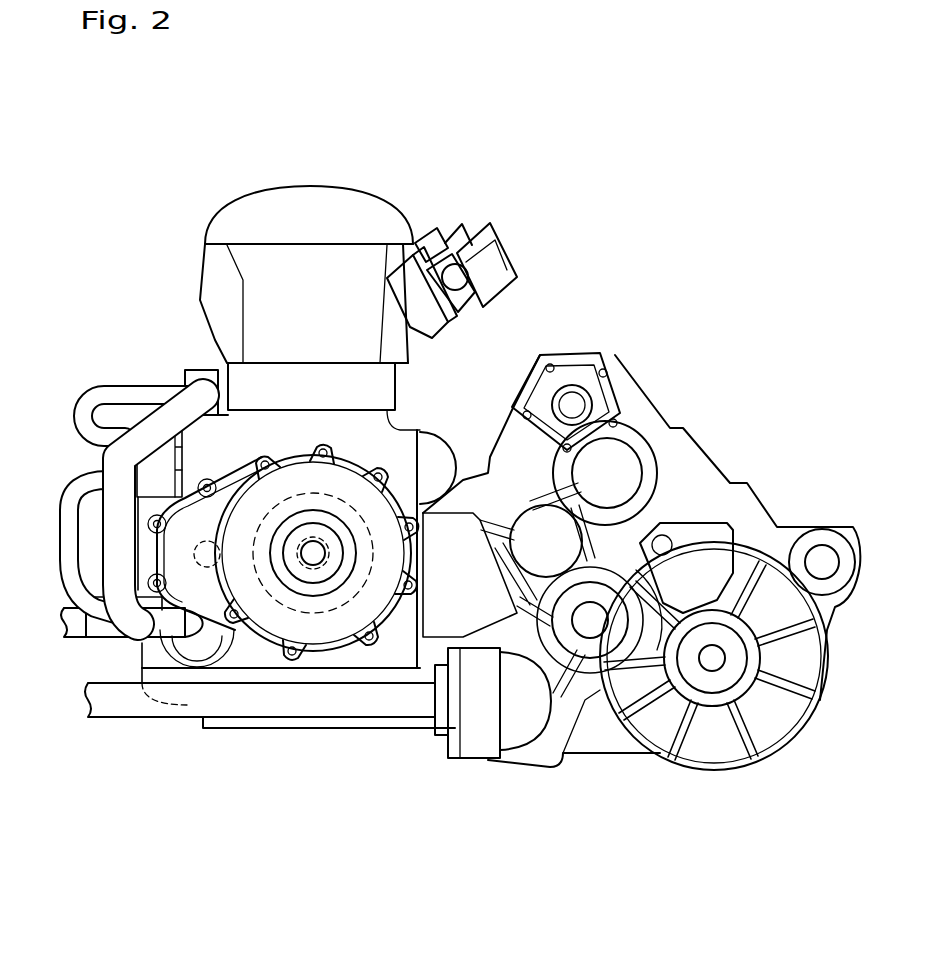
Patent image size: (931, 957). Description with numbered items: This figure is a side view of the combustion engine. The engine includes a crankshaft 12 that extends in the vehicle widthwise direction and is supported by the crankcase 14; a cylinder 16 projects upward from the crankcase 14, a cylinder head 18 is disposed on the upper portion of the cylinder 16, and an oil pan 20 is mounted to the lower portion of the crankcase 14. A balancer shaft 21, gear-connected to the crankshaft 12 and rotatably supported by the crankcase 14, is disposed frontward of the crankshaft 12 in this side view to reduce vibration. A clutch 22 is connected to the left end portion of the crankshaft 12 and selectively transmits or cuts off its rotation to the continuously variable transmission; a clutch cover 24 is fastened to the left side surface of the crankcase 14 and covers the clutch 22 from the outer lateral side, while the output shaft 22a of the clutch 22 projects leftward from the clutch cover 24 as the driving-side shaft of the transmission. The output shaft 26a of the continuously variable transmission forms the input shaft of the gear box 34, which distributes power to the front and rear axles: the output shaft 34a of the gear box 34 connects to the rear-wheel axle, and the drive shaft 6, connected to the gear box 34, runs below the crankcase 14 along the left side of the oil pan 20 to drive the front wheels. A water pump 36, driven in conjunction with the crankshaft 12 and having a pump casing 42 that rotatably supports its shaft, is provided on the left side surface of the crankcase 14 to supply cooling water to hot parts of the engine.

The drive shaft 6 is at (107, 707).
The crankshaft 12 is at (340, 535).
The crankcase 14 is at (393, 647).
The cylinder 16 is at (237, 378).
The cylinder head 18 is at (242, 267).
The oil pan 20 is at (258, 727).
The balancer shaft 21 is at (222, 554).
The clutch 22 is at (338, 496).
The output shaft of the clutch 22a is at (313, 553).
The clutch cover 24 is at (327, 628).
The output shaft of the continuously variable transmission 26a is at (572, 405).
The gear box 34 is at (717, 460).
The output shaft of the gear box 34a is at (712, 660).
The water pump 36 is at (183, 660).
The pump casing 42 is at (210, 650).